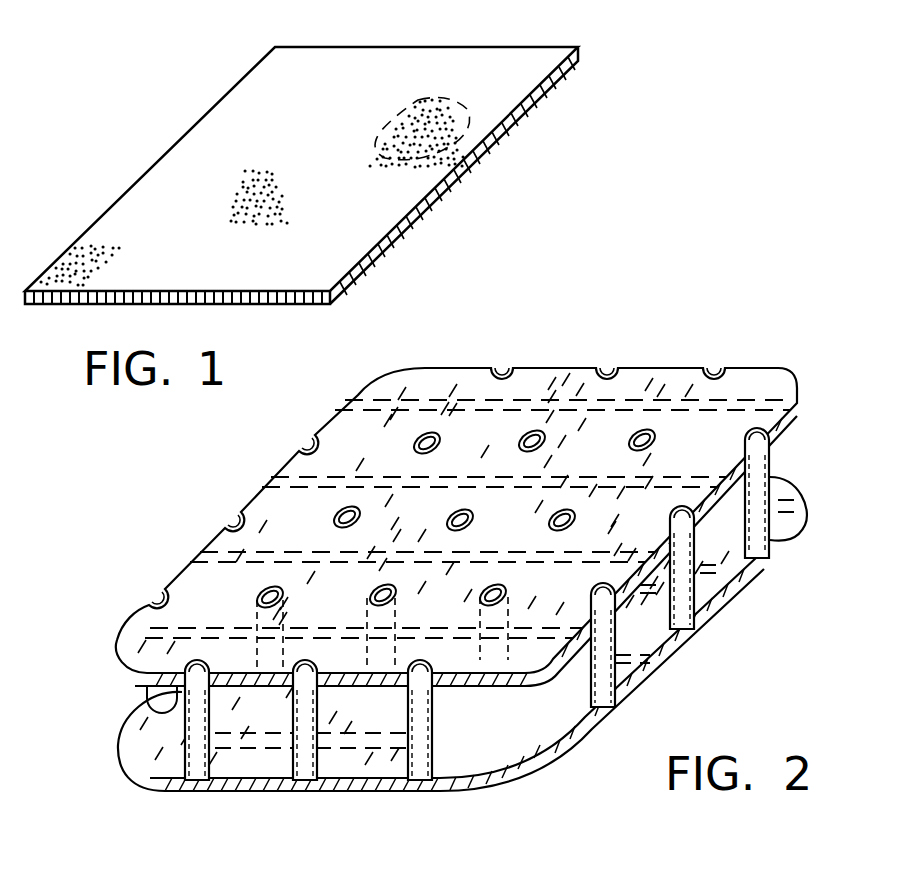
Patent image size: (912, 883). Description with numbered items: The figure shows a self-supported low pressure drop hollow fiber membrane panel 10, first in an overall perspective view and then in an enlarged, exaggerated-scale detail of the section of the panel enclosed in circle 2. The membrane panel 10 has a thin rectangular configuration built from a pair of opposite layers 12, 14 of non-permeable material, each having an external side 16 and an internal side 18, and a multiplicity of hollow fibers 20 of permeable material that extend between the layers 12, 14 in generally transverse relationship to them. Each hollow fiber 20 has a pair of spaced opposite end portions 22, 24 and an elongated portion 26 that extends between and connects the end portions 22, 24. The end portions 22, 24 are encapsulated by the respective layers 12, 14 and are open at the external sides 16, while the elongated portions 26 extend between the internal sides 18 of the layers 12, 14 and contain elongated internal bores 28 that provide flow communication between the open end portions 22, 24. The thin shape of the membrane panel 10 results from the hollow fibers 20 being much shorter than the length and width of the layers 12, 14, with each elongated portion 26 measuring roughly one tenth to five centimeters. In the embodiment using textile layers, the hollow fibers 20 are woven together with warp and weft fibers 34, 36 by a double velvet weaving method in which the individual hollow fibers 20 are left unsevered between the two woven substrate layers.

In FIG. 1, the hollow fiber membrane panel 10 is at (418, 30).
In FIG. 2, the hollow fiber membrane panel 10 is at (543, 352).
In FIG. 1, the circle 2 is at (418, 102).
In FIG. 1, the layer of non-permeable material 12 is at (432, 185).
In FIG. 2, the layer of non-permeable material 12 is at (178, 568).
In FIG. 1, the layer of non-permeable material 14 is at (368, 274).
In FIG. 2, the layer of non-permeable material 14 is at (645, 684).
In FIG. 1, the external side 16 is at (138, 188).
In FIG. 2, the external side 16 is at (688, 366).
In FIG. 1, the internal side 18 is at (192, 297).
In FIG. 2, the internal side 18 is at (797, 427).
In FIG. 1, the hollow fiber 20 is at (414, 221).
In FIG. 2, the hollow fiber 20 is at (774, 462).
In FIG. 1, the end portion 22 is at (406, 166).
In FIG. 2, the end portion 22 is at (528, 451).
In FIG. 2, the end portion 24 is at (757, 560).
In FIG. 2, the elongated portion 26 is at (480, 615).
In FIG. 2, the internal bore 28 is at (782, 548).
In FIG. 2, the warp fiber 34 is at (718, 478).
In FIG. 2, the weft fiber 36 is at (636, 368).